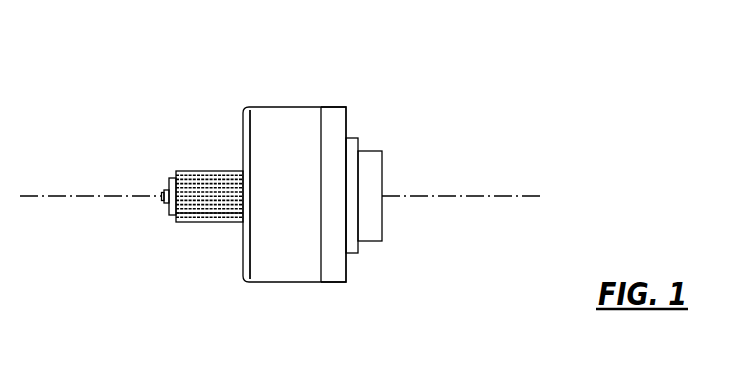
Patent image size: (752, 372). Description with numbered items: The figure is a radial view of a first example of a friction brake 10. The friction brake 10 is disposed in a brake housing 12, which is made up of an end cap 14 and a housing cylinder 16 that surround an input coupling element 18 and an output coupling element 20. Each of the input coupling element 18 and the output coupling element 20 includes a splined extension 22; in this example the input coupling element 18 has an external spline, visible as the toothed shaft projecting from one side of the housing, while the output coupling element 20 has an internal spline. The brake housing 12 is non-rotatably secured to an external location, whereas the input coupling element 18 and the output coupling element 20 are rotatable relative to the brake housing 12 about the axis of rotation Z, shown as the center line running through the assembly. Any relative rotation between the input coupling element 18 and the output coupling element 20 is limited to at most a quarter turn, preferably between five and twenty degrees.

The friction brake 10 is at (470, 158).
The brake housing 12 is at (287, 123).
The end cap 14 is at (335, 113).
The housing cylinder 16 is at (283, 265).
The input coupling element 18 is at (222, 171).
The output coupling element 20 is at (372, 165).
The splined extension 22 is at (215, 206).
The axis of rotation Z is at (497, 196).